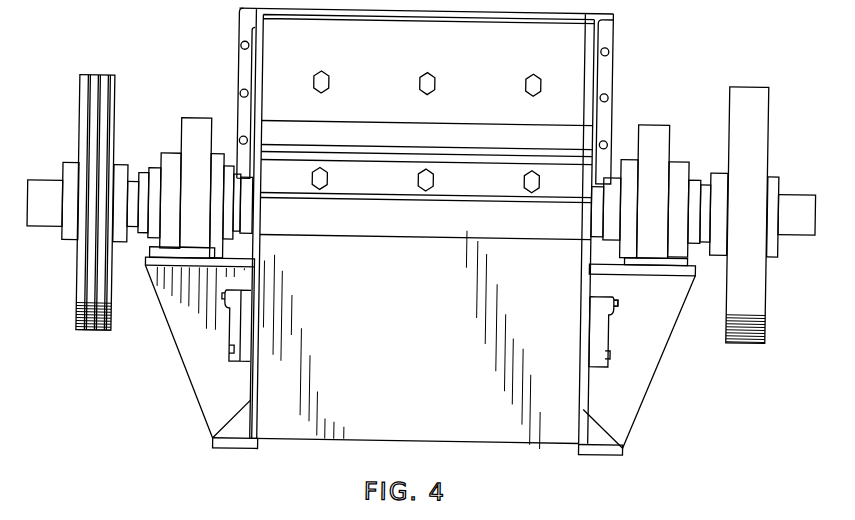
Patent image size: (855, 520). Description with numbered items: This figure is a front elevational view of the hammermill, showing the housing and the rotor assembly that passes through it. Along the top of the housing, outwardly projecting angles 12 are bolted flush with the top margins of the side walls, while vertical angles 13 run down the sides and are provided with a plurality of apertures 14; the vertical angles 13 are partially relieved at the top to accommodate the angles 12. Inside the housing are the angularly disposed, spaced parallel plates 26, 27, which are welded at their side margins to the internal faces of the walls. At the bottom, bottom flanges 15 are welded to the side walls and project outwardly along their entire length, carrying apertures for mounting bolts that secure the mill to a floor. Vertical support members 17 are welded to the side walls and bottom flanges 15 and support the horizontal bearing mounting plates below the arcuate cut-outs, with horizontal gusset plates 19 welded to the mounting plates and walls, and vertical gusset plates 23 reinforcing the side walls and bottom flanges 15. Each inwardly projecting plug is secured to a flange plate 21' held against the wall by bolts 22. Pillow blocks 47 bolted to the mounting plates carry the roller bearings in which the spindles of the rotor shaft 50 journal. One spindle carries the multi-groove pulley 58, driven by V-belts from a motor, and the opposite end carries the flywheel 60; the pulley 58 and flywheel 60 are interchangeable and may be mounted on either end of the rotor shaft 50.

The outwardly projecting angles 12 is at (236, 12).
The vertical angles 13 is at (610, 49).
The apertures 14 is at (238, 96).
The bottom flanges 15 is at (228, 452).
The vertical support members 17 is at (188, 385).
The horizontal gusset plates 19 is at (629, 273).
The flange plate 21' is at (620, 332).
The bolts 22 is at (620, 304).
The vertical gusset plates 23 is at (610, 422).
The angularly disposed plate 26 is at (573, 137).
The angularly disposed plate 27 is at (413, 232).
The pillow blocks 47 is at (180, 139).
The rotor shaft 50 is at (786, 230).
The multi-groove pulley 58 is at (113, 87).
The flywheel 60 is at (767, 139).